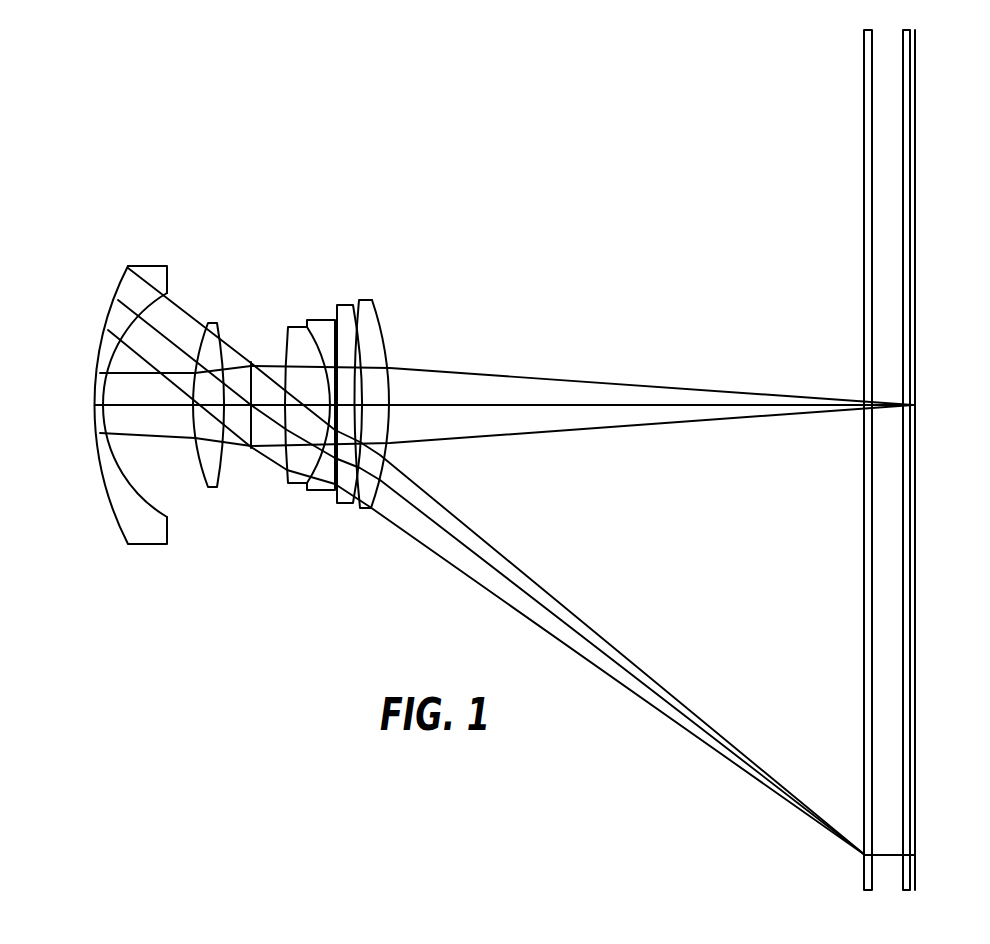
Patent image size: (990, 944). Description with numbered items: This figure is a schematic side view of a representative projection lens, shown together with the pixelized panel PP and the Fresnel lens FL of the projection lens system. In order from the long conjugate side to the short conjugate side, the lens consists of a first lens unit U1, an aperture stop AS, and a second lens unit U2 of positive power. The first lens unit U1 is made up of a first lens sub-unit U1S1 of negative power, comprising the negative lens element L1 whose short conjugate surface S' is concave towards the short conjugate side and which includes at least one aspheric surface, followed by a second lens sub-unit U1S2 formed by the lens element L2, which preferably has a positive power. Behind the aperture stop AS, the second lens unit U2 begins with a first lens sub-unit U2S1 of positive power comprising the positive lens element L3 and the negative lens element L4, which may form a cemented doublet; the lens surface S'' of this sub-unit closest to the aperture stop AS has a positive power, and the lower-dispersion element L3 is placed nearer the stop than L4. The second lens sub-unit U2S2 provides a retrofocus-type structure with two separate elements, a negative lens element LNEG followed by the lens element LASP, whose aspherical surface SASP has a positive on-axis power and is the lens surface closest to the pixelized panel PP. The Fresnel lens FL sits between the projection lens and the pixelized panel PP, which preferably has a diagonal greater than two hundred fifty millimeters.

The negative lens element L1 is at (148, 386).
The lens element of second lens sub-unit L2 is at (214, 322).
The positive lens element L3 is at (293, 411).
The negative lens element L4 is at (318, 321).
The negative lens element LNEG is at (346, 306).
The aspheric lens element LASP is at (430, 404).
The aspherical surface SASP is at (395, 429).
The aperture stop AS is at (249, 432).
The short conjugate surface S' is at (153, 405).
The lens surface closest to aperture stop S'' is at (282, 487).
The first lens sub-unit U1S1 is at (178, 555).
The second lens sub-unit U1S2 is at (230, 555).
The first lens sub-unit U2S1 is at (333, 555).
The second lens sub-unit U2S2 is at (390, 555).
The first lens unit U1 is at (237, 603).
The second lens unit U2 is at (410, 603).
The Fresnel lens FL is at (863, 645).
The pixelized panel PP is at (917, 588).